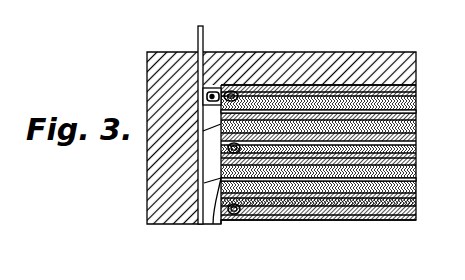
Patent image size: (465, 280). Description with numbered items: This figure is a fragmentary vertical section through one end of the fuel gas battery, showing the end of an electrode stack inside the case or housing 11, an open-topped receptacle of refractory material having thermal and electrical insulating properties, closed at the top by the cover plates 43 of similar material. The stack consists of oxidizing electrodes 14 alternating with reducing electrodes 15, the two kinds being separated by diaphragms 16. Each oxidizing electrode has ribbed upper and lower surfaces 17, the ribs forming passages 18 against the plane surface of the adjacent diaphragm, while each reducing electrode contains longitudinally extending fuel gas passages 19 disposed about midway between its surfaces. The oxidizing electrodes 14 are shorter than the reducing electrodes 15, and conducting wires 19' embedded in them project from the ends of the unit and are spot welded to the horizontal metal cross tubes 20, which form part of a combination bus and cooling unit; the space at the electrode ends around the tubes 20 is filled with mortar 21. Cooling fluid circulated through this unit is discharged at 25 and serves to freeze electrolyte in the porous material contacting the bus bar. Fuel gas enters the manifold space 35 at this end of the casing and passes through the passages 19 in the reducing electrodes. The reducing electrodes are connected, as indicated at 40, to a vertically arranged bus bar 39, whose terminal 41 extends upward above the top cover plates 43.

The case or housing 11 is at (146, 152).
The oxidizing electrodes 14 is at (408, 84).
The reducing electrodes 15 is at (408, 120).
The diaphragms 16 is at (408, 100).
The ribbed surfaces 17 is at (377, 77).
The passages 18 is at (359, 77).
The fuel gas passages 19 is at (337, 149).
The conducting wires 19' is at (318, 141).
The horizontal metal cross tubes 20 is at (222, 83).
The mortar 21 is at (213, 95).
The cooling fluid discharge 25 is at (200, 89).
The manifold spaces 35 is at (203, 149).
The bus bars 39 is at (195, 190).
The connection of reducing electrodes to bus bars 40 is at (205, 216).
The terminal 41 is at (195, 19).
The top cover plates 43 is at (348, 45).